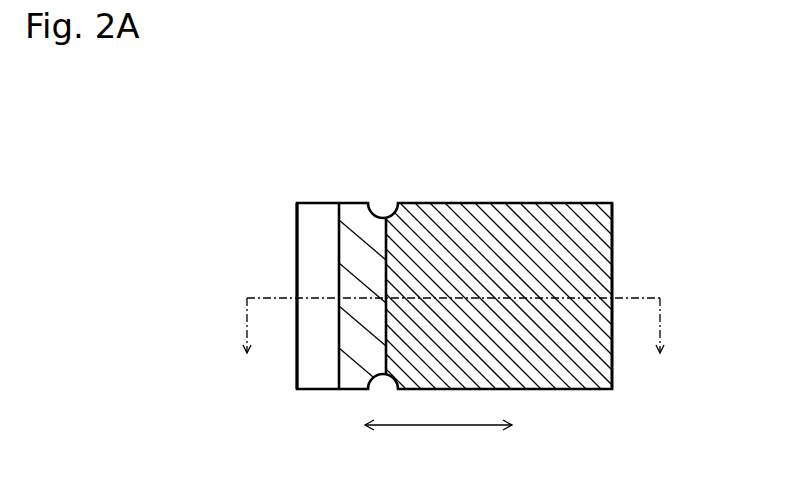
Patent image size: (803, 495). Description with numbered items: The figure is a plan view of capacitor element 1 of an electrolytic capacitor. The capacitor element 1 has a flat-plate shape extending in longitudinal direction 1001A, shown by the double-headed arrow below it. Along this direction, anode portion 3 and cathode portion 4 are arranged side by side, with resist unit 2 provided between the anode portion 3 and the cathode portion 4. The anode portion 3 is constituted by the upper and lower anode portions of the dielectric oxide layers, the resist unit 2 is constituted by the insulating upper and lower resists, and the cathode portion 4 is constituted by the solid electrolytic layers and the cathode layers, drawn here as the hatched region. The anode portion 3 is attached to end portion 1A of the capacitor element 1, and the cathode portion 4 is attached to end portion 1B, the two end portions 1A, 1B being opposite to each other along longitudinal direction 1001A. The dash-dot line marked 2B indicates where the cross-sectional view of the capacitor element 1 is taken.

The capacitor element 1 is at (678, 158).
The resist unit 2 is at (360, 210).
The anode portion 3 is at (309, 209).
The cathode portion 4 is at (590, 208).
The end portion 1A is at (297, 267).
The end portion 1B is at (612, 273).
The line 2B- 2B is at (449, 342).
The longitudinal direction 1001A is at (412, 425).